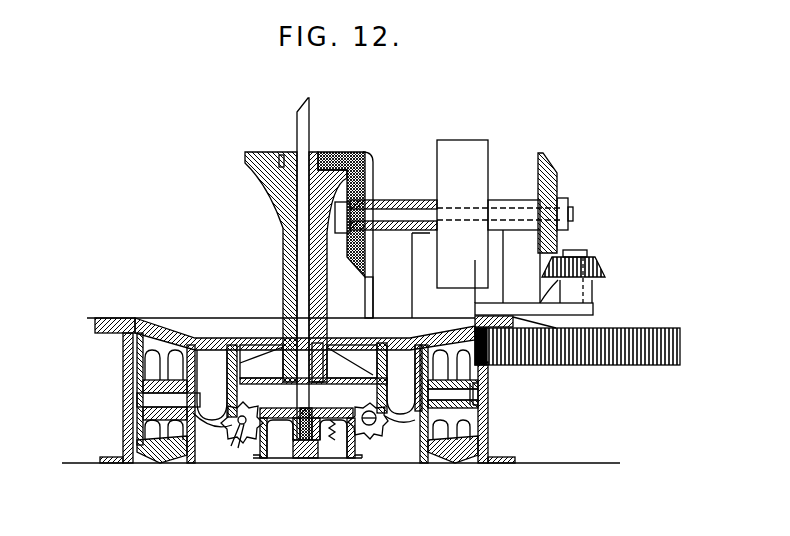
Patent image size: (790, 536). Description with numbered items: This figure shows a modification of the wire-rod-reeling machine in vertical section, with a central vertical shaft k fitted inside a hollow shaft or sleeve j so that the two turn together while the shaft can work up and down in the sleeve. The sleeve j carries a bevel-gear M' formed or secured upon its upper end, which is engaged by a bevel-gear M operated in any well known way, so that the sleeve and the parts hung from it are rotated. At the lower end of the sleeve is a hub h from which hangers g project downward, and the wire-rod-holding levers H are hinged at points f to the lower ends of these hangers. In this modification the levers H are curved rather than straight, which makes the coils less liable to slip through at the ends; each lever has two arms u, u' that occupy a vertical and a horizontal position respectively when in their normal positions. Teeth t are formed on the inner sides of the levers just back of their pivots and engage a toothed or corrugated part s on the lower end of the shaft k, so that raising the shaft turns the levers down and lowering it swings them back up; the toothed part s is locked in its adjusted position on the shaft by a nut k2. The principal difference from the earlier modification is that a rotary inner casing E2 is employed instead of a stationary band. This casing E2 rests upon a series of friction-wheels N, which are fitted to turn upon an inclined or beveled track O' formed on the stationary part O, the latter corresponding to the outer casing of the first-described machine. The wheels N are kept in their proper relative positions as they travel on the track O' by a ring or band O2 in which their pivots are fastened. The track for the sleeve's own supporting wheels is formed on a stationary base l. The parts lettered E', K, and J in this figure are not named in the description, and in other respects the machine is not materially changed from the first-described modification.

The central vertical shaft k is at (306, 143).
The bevel-gear M' is at (344, 203).
The bevel-gear M is at (376, 235).
The hollow shaft or sleeve j is at (283, 264).
The frame E' is at (280, 390).
The ring or band O2 is at (137, 385).
The stationary part O is at (306, 418).
The friction-wheels N is at (152, 418).
The inclined or beveled track O' is at (306, 465).
The hub h is at (250, 374).
The arm u is at (217, 382).
The arm u' is at (307, 421).
The wire-rod-holding levers H is at (390, 400).
The hinge points f is at (234, 437).
The teeth t is at (242, 429).
The base l is at (212, 438).
The casing K is at (307, 433).
The nut k2 is at (298, 445).
The sleeve J is at (301, 374).
The hangers g is at (368, 392).
The toothed part s is at (333, 433).
The rotary inner casing E2 is at (423, 427).